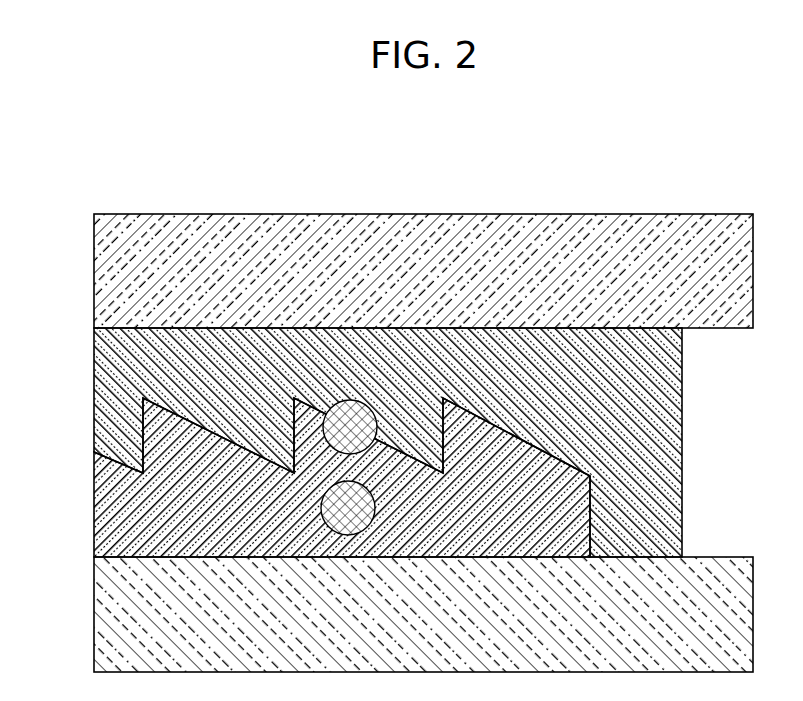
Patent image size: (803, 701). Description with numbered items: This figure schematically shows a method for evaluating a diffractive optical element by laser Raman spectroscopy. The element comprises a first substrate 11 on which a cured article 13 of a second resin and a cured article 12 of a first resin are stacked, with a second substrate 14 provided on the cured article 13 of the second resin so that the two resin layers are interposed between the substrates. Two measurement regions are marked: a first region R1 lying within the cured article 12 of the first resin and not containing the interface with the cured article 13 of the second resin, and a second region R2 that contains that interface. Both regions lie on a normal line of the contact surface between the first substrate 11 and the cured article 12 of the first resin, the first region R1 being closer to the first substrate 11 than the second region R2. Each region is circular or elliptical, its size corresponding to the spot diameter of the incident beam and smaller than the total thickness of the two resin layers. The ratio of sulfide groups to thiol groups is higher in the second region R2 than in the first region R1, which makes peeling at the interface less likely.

The first substrate 11 is at (150, 630).
The cured article of first resin 12 is at (147, 514).
The cured article of second resin 13 is at (147, 378).
The second substrate 14 is at (147, 296).
The first region R1 is at (372, 503).
The second region R2 is at (372, 414).